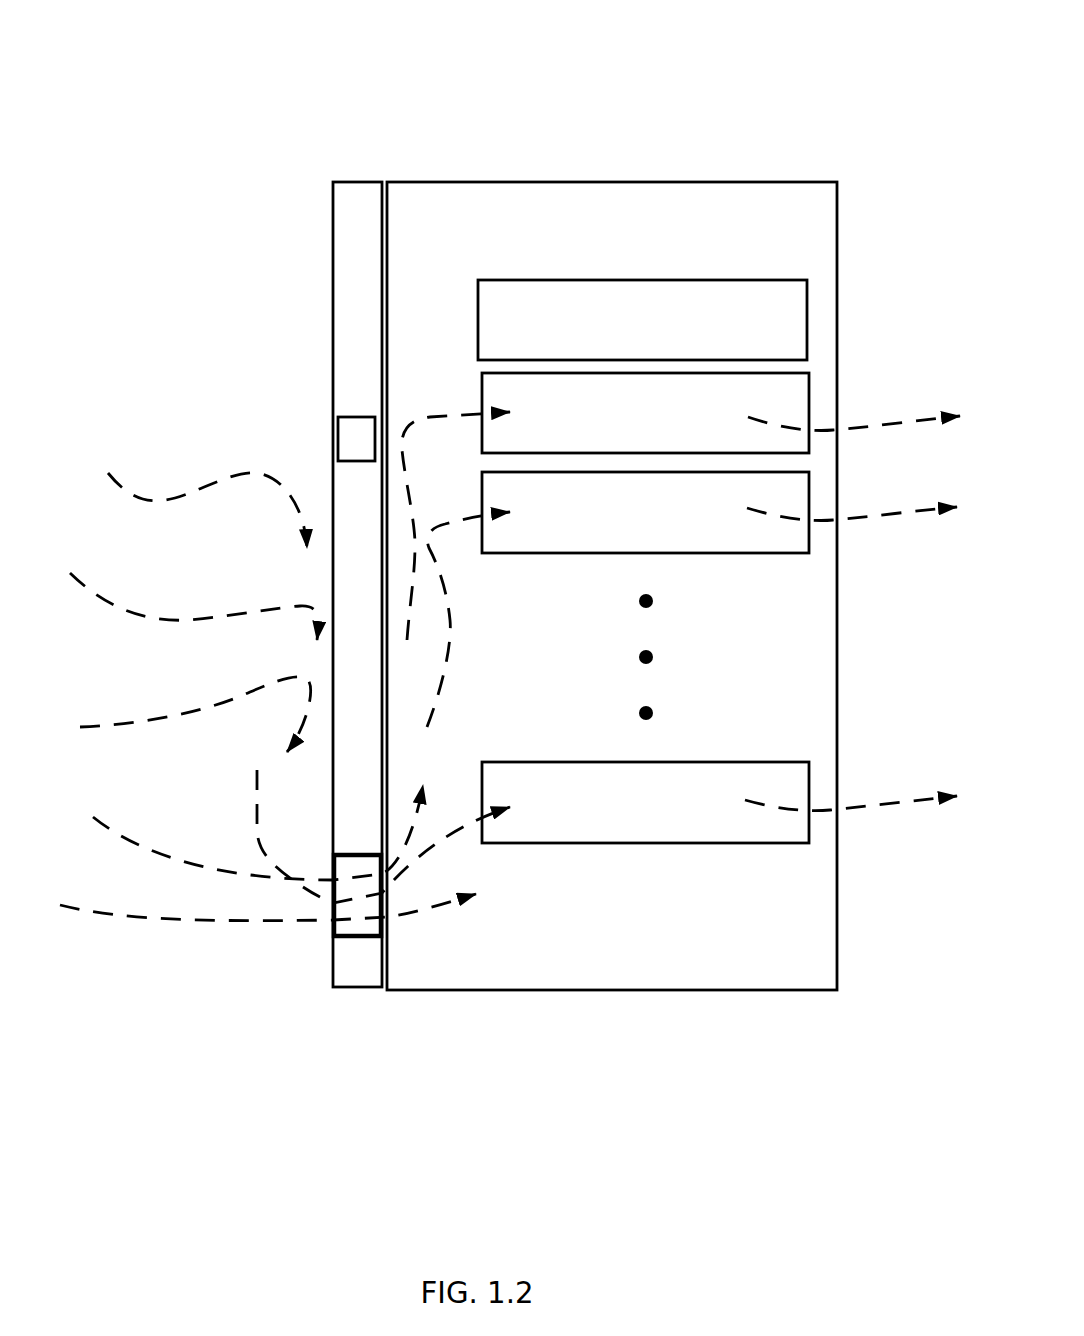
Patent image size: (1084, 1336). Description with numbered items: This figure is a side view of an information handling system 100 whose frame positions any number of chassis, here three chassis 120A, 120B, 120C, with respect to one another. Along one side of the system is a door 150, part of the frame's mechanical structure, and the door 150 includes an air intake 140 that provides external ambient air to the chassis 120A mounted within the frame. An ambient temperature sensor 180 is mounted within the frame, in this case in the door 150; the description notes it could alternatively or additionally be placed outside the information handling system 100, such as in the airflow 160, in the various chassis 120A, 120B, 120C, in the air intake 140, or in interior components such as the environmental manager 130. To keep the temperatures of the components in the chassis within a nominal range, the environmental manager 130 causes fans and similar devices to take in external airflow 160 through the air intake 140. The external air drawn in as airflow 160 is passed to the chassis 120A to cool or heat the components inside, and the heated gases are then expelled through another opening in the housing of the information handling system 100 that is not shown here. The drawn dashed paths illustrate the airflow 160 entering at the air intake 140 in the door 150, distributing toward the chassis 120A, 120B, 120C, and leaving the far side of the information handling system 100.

The information handling system 100 is at (711, 126).
The door 150 is at (329, 217).
The ambient temperature sensor 180 is at (332, 432).
The air intake 140 is at (346, 975).
The airflow 160 is at (121, 944).
The environmental manager 130 is at (642, 320).
The chassis 120A is at (645, 413).
The chassis 120B is at (645, 512).
The chassis 120C is at (645, 802).